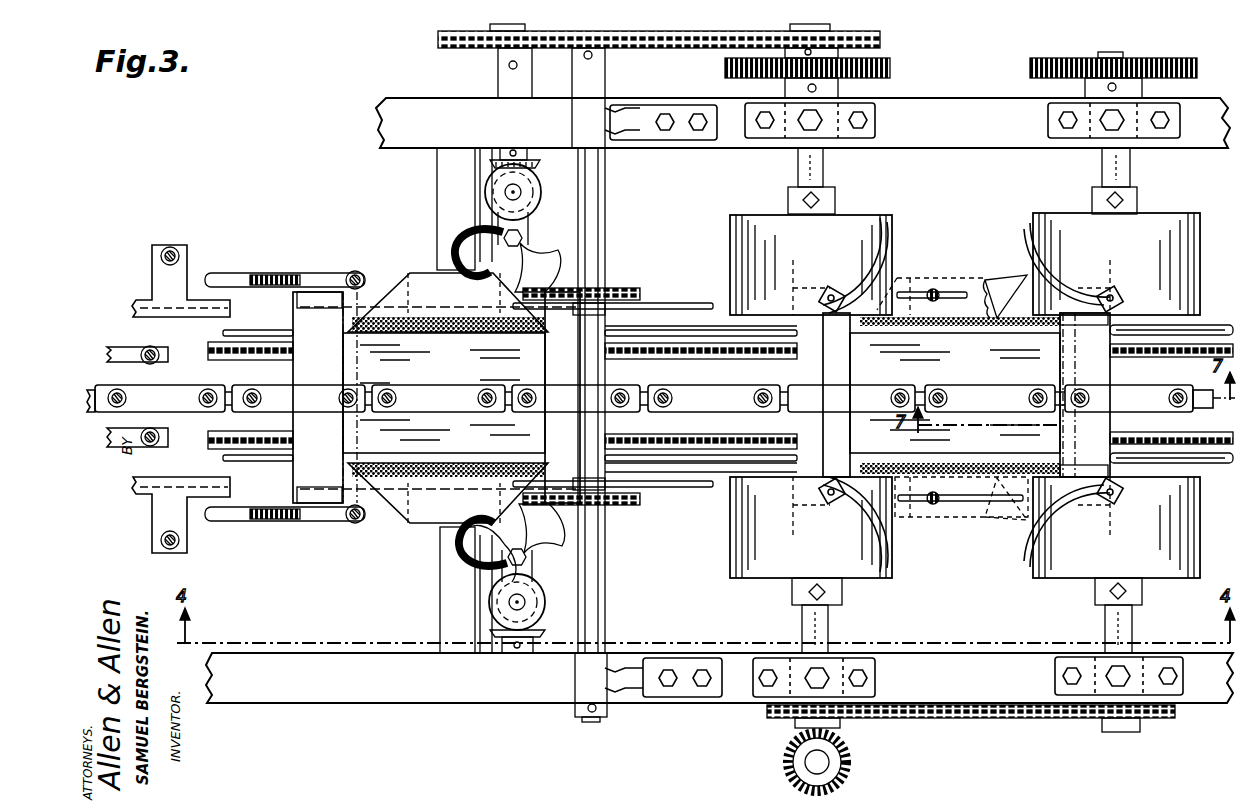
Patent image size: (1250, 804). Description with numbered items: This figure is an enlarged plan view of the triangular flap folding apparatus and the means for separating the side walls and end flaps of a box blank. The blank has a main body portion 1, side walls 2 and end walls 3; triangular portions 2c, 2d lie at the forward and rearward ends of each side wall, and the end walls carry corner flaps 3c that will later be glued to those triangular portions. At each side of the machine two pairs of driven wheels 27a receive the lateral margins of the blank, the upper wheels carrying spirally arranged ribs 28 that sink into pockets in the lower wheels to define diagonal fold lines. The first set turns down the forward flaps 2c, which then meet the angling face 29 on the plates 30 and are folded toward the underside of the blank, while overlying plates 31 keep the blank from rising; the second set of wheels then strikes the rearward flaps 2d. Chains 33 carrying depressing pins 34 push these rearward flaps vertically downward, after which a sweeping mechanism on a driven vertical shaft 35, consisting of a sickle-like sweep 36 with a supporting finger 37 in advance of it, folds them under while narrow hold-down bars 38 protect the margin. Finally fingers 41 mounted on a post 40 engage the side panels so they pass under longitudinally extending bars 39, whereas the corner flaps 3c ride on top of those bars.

The main body portion 1 is at (701, 393).
The side walls 2 is at (938, 253).
The forward triangular flaps 2c is at (408, 273).
The rearward triangular flaps 2d is at (1005, 530).
The end walls 3 is at (701, 397).
The corner flaps 3c is at (315, 292).
The driven rolls or wheels 27a is at (845, 222).
The ribs 28 is at (886, 230).
The angling face 29 is at (1005, 285).
The plates 30 is at (988, 280).
The overlying plates 31 is at (962, 292).
The chains 33 is at (640, 288).
The depressing pins 34 is at (530, 250).
The driven vertical shaft 35 is at (520, 190).
The sickle-like sweep 36 is at (514, 553).
The supporting finger 37 is at (470, 248).
The hold-down bars 38 is at (665, 303).
The longitudinally extending bars 39 is at (197, 275).
The post 40 is at (357, 272).
The fingers 41 is at (268, 273).